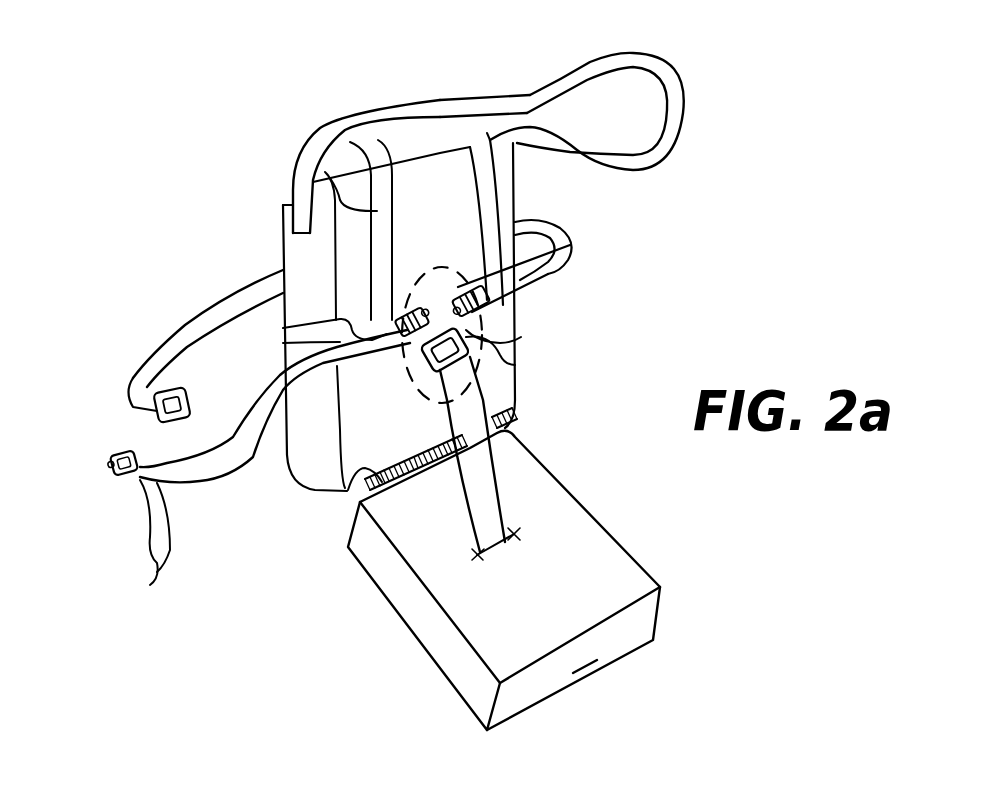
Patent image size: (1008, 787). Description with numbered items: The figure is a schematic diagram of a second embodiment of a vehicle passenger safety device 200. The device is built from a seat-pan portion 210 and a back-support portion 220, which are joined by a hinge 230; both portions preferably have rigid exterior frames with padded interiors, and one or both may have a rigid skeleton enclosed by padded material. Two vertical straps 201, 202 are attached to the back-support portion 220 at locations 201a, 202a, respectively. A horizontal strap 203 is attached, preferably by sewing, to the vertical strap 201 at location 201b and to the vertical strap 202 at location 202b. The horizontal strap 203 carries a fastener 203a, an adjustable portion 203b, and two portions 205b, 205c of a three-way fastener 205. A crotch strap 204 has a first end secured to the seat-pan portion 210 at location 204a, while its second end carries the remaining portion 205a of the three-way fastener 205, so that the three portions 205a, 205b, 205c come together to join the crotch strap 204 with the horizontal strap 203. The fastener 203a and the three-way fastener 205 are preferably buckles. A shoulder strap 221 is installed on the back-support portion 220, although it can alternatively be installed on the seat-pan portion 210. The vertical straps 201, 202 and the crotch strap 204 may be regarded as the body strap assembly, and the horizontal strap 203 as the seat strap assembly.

The vehicle passenger safety device 200 is at (196, 99).
The vertical strap 201 is at (300, 172).
The attachment location of vertical strap 201a is at (368, 150).
The attachment location of horizontal strap to vertical strap 201b is at (283, 331).
The vertical strap 202 is at (490, 172).
The attachment location of vertical strap 202a is at (482, 140).
The attachment location of horizontal strap to vertical strap 202b is at (517, 290).
The horizontal strap 203 is at (565, 248).
The fastener 203a is at (125, 476).
The adjustable portion 203b is at (150, 583).
The crotch strap 204 is at (488, 460).
The attachment location of crotch strap 204a is at (492, 545).
The three-way fastener 205 is at (408, 404).
The portion of three-way fastener 205a is at (503, 350).
The portion of three-way fastener 205b is at (405, 285).
The portion of three-way fastener 205c is at (524, 337).
The seat-pan portion 210 is at (637, 543).
The back-support portion 220 is at (280, 233).
The shoulder strap 221 is at (685, 110).
The hinge 230 is at (350, 491).